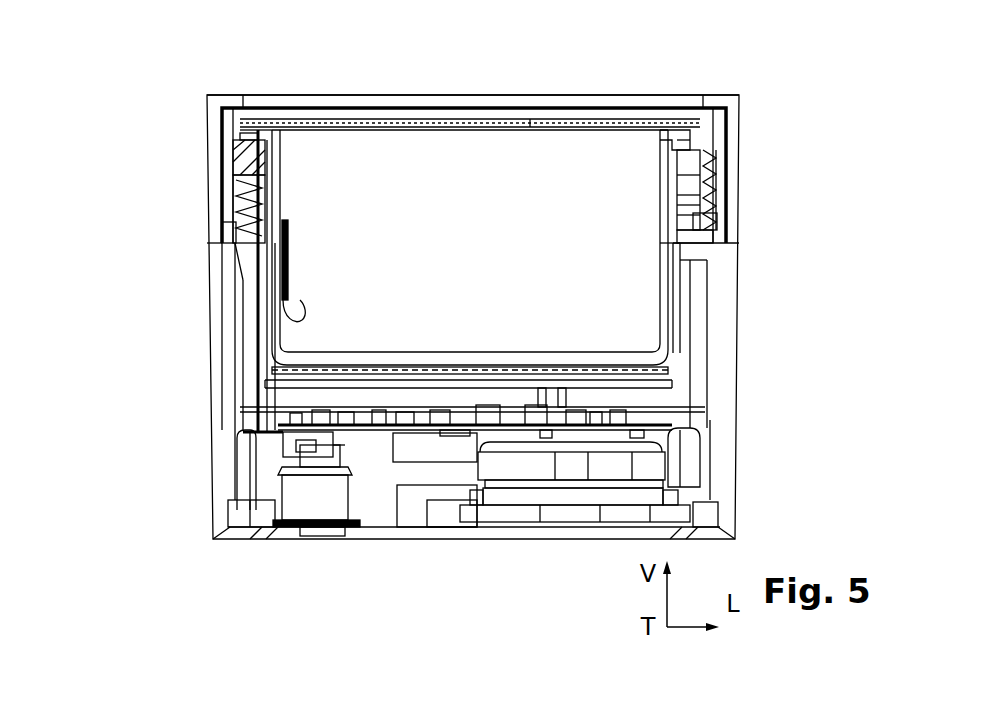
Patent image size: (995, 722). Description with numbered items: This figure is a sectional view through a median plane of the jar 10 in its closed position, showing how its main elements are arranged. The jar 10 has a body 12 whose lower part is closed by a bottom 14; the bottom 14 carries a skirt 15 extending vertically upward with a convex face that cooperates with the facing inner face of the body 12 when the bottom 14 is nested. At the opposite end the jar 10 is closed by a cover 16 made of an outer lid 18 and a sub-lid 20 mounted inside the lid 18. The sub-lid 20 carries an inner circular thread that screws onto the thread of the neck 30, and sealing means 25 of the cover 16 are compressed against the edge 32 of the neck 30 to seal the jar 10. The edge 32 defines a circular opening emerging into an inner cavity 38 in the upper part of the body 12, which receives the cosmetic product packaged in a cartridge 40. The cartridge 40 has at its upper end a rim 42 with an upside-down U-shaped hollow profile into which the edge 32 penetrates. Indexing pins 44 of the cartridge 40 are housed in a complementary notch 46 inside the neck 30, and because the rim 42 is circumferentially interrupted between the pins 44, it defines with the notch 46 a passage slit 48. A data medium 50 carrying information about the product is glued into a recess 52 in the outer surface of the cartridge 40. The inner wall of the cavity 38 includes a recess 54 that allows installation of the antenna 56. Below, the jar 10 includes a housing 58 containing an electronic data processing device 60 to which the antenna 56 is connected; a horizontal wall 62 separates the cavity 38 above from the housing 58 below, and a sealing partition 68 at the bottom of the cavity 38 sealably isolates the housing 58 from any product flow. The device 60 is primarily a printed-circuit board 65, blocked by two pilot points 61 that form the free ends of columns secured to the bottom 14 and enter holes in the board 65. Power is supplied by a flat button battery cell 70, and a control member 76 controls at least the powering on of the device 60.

The jar 10 is at (752, 68).
The body 12 is at (723, 322).
The bottom 14 is at (432, 530).
The skirt 15 is at (702, 473).
The cover 16 is at (702, 94).
The outer lid 18 is at (730, 145).
The sub-lid 20 is at (717, 178).
The sealing means 25 is at (462, 150).
The neck 30 is at (710, 230).
The edge 32 is at (695, 146).
The inner cavity 38 is at (372, 170).
The cartridge 40 is at (680, 262).
The rim 42 is at (683, 135).
The indexing pin 44 is at (278, 143).
The notch 46 is at (270, 165).
The passage slit 48 is at (282, 163).
The data medium 50 is at (275, 231).
The recess 52 is at (300, 315).
The recess 54 is at (246, 299).
The antenna 56 is at (253, 260).
The housing 58 is at (380, 482).
The electronic data processing device 60 is at (662, 440).
The pilot point 61 is at (283, 428).
The wall 62 is at (662, 402).
The board 65 is at (285, 468).
The sealing partition 68 is at (660, 381).
The battery cell 70 is at (608, 468).
The control member 76 is at (313, 498).